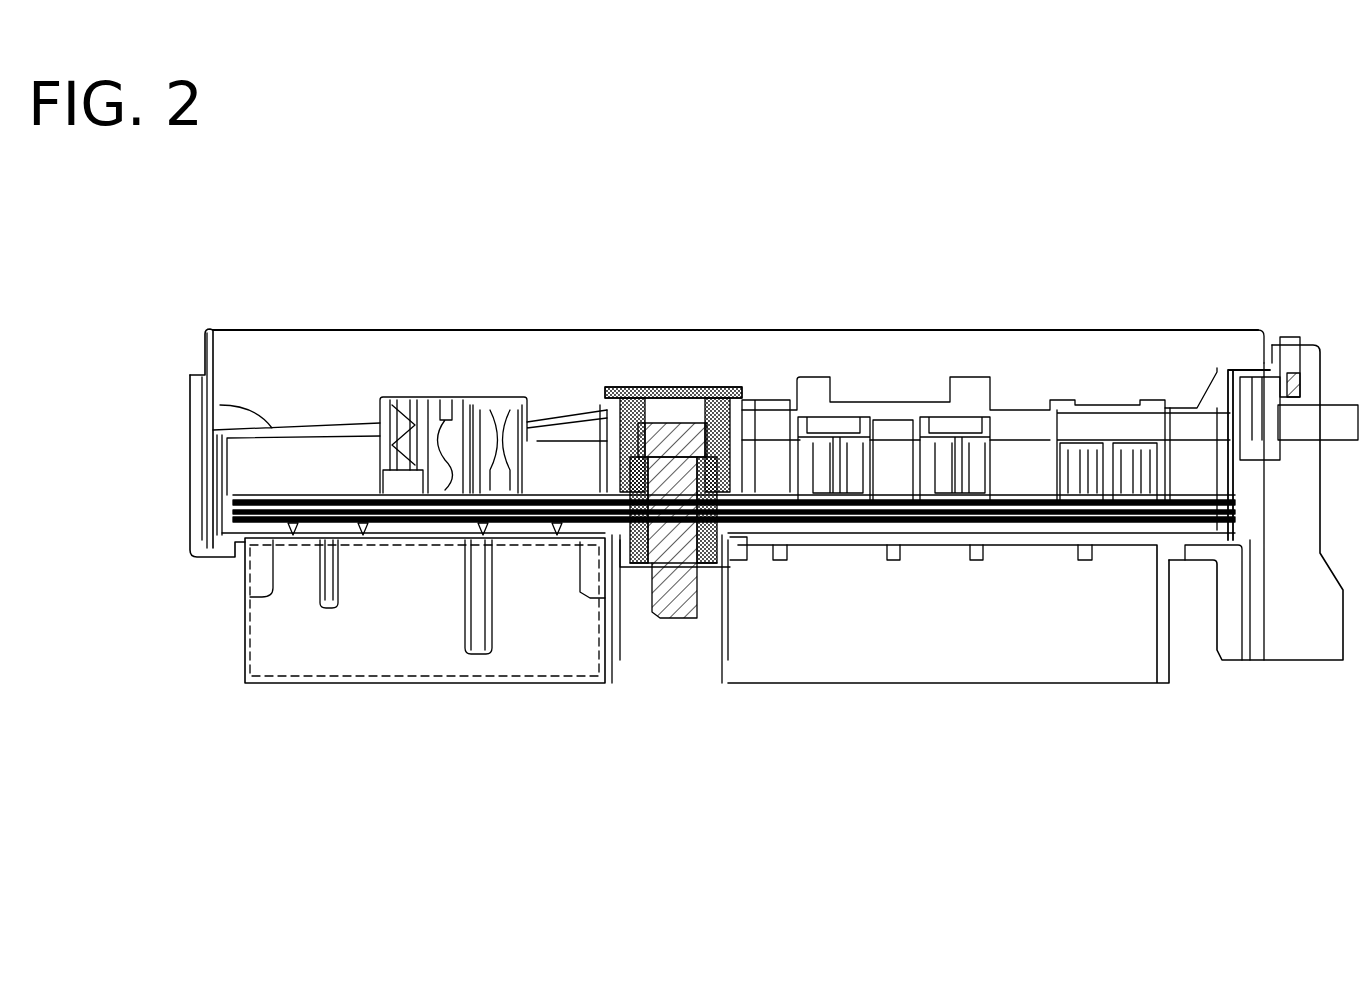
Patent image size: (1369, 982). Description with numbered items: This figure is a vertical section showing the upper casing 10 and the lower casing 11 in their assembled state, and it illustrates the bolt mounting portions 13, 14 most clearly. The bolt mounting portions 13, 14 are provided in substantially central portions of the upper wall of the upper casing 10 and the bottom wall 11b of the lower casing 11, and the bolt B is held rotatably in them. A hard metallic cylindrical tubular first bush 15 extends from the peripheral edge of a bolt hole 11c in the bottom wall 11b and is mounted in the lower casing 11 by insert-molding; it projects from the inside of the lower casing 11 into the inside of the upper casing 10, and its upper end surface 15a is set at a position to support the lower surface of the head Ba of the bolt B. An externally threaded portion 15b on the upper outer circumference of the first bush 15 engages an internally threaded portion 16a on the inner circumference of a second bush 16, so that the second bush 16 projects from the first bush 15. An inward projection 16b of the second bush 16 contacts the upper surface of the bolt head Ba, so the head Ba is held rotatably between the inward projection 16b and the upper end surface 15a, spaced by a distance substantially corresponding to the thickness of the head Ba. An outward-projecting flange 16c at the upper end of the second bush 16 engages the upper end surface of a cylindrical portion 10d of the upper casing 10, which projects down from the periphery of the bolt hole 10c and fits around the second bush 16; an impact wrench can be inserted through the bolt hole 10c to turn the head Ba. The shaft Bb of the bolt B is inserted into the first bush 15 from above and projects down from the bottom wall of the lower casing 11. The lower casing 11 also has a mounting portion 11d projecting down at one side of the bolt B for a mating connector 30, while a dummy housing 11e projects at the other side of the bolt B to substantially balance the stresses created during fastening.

The upper casing 10 is at (220, 406).
The bolt hole 10c is at (605, 410).
The cylindrical portion 10d is at (744, 462).
The lower casing 11 is at (206, 494).
The bottom wall 11b is at (835, 540).
The bolt hole 11c is at (625, 545).
The mounting portion 11d is at (247, 642).
The dummy housing 11e is at (1000, 660).
The bolt mounting portion 13 is at (745, 400).
The bolt mounting portion 14 is at (740, 545).
The first bush 15 is at (595, 492).
The upper end surface 15a is at (668, 423).
The externally threaded portion 15b is at (628, 540).
The second bush 16 is at (620, 355).
The internally threaded portion 16a is at (620, 458).
The inward projection 16b is at (735, 460).
The outward-projecting flange 16c is at (610, 392).
The mating connector 30 is at (245, 607).
The bolt B is at (615, 501).
The bolt head Ba is at (683, 445).
The bolt shaft Bb is at (672, 620).